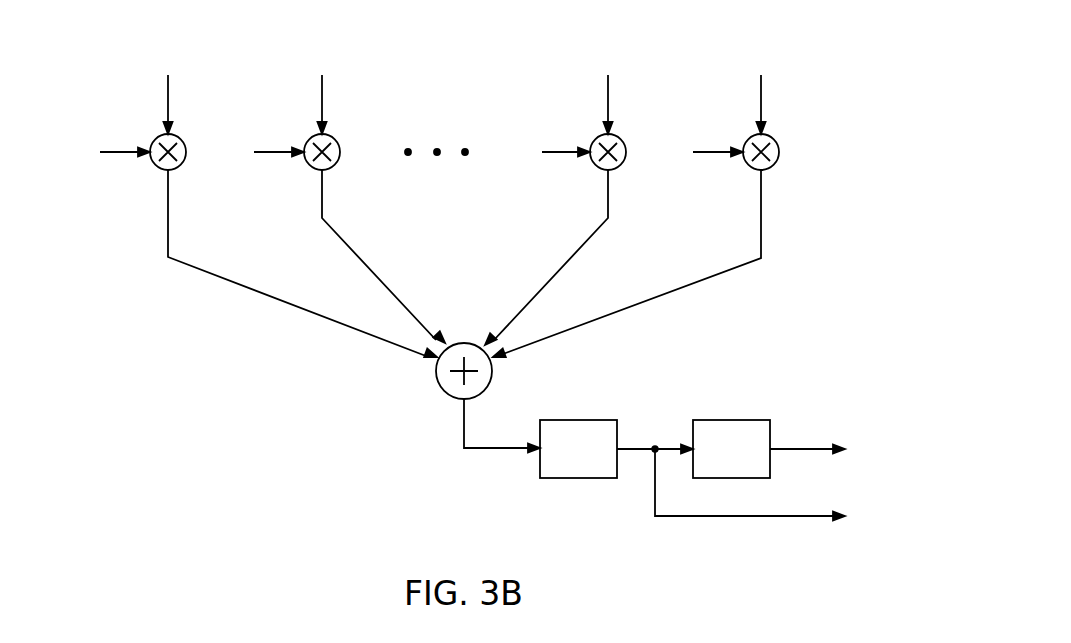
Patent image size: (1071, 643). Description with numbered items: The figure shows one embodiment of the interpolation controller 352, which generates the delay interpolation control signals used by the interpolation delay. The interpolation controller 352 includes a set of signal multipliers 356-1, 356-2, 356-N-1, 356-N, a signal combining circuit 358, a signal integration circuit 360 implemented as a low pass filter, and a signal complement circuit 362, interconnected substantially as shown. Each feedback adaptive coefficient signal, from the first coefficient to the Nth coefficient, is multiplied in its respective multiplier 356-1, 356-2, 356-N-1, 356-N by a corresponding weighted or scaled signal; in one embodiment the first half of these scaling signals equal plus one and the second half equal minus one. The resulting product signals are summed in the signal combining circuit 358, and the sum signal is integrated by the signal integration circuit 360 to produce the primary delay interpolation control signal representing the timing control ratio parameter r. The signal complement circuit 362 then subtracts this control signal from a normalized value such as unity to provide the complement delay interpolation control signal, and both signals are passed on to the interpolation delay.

The interpolation controller 352 is at (265, 410).
The signal multiplier 356-1 is at (186, 137).
The signal multiplier 356-2 is at (340, 137).
The signal multiplier 356-N-1 is at (625, 137).
The signal multiplier 356-N is at (779, 137).
The signal combining circuit 358 is at (443, 393).
The signal integration circuit 360 is at (605, 422).
The signal complement circuit 362 is at (757, 426).